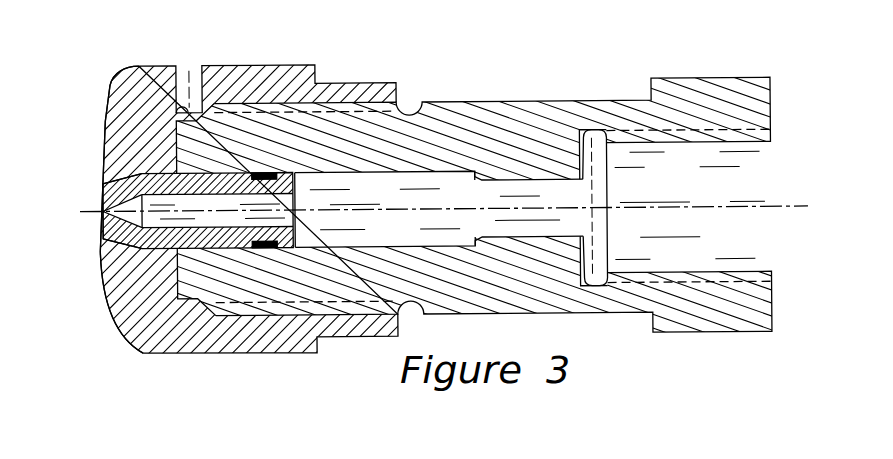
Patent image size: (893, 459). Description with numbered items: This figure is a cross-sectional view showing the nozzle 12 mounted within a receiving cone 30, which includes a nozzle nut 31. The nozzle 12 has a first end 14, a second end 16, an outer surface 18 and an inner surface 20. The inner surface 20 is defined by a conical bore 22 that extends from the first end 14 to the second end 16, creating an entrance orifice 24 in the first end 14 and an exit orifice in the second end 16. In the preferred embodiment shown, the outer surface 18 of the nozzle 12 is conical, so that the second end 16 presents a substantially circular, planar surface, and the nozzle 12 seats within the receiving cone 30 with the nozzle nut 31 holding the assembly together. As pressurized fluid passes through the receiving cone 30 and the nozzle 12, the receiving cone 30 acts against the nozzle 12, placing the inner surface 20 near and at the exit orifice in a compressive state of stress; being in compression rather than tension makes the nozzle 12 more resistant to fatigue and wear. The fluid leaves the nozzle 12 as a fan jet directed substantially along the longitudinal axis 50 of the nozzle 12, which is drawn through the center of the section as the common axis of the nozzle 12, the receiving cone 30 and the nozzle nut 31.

The nozzle 12 is at (118, 116).
The first end 14 is at (230, 210).
The second end 16 is at (83, 220).
The outer surface 18 is at (99, 154).
The inner surface 20 is at (102, 271).
The conical bore 22 is at (217, 210).
The entrance orifice 24 is at (450, 209).
The receiving cone 30 is at (474, 229).
The nozzle nut 31 is at (247, 178).
The longitudinal axis 50 is at (455, 239).